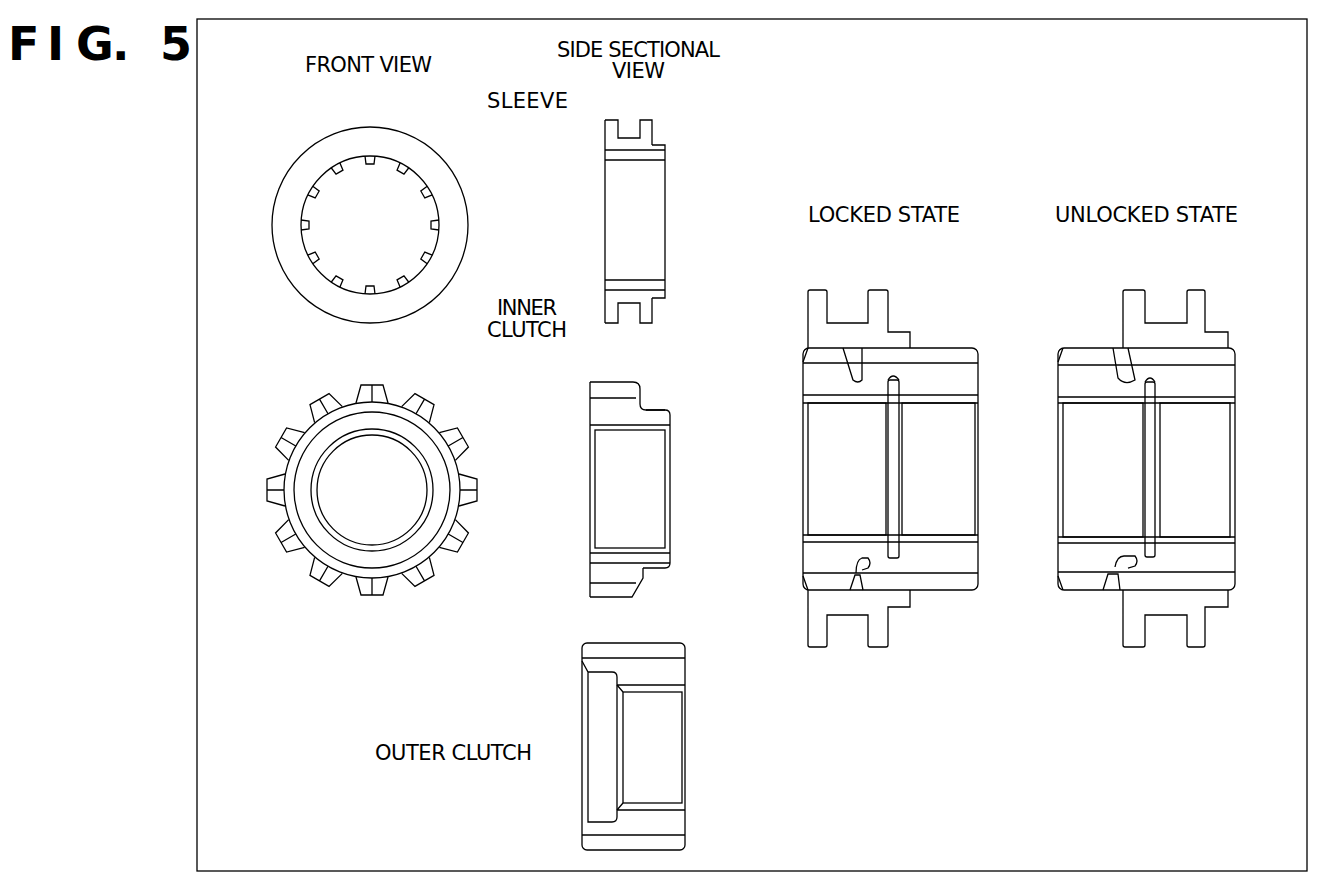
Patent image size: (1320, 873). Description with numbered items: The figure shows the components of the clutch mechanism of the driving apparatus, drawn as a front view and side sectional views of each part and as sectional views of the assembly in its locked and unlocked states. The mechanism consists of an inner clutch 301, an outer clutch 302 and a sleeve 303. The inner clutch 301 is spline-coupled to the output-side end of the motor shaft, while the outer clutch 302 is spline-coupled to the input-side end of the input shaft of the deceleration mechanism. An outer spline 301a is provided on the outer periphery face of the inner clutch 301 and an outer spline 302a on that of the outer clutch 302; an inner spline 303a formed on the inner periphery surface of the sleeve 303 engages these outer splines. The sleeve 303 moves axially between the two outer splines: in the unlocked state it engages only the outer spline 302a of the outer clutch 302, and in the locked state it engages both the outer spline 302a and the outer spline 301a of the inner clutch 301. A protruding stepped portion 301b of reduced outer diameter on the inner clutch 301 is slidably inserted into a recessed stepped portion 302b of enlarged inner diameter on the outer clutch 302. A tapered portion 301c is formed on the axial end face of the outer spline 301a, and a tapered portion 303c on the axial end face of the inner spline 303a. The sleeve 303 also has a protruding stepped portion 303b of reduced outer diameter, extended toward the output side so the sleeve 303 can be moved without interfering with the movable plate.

The inner clutch 301 is at (322, 488).
The outer spline 301a is at (452, 442).
The protruding stepped portion 301b is at (655, 408).
The tapered portion 301c is at (381, 384).
The outer clutch 302 is at (672, 718).
The outer spline 302a is at (645, 653).
The recessed stepped portion 302b is at (603, 682).
The sleeve 303 is at (320, 229).
The inner spline 303a is at (350, 283).
The protruding stepped portion 303b is at (655, 140).
The tapered portion 303c is at (372, 166).